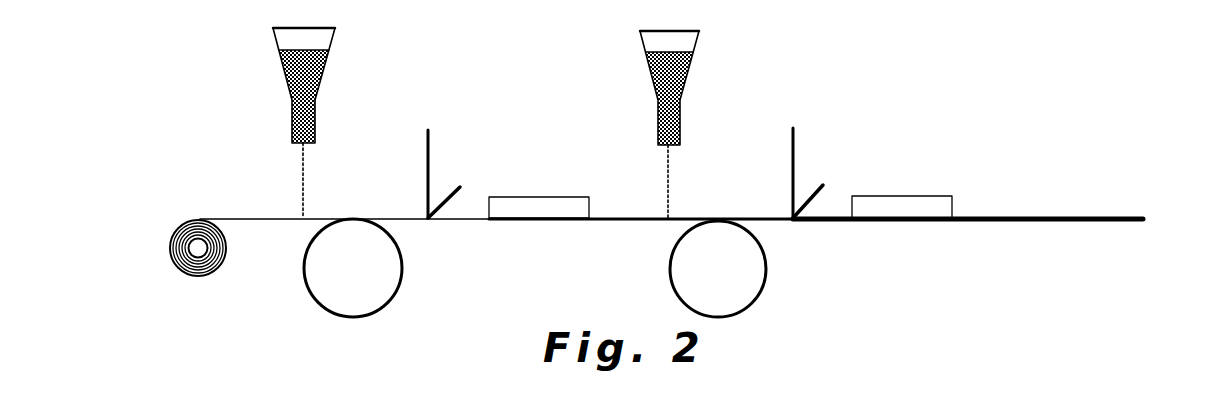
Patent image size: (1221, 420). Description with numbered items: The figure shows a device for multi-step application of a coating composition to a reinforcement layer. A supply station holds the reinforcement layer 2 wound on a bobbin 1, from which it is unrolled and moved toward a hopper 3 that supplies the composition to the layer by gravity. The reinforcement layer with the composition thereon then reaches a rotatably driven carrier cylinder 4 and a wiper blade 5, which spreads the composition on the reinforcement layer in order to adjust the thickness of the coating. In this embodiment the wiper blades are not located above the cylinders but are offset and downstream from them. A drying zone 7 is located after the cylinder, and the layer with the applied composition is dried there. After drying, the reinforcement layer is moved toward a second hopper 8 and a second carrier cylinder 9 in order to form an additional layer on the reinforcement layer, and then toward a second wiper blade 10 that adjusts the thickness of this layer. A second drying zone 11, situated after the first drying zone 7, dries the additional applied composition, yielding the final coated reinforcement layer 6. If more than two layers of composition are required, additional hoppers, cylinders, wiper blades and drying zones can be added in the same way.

The bobbin 1 is at (178, 232).
The reinforcement layer 2 is at (285, 221).
The hopper 3 is at (298, 42).
The carrier cylinder 4 is at (402, 280).
The wiper blade 5 is at (445, 177).
The coated reinforcement layer 6 is at (992, 223).
The drying zone 7 is at (540, 208).
The second hopper 8 is at (657, 40).
The second carrier cylinder 9 is at (767, 283).
The second wiper blade 10 is at (807, 180).
The second drying zone 11 is at (905, 206).